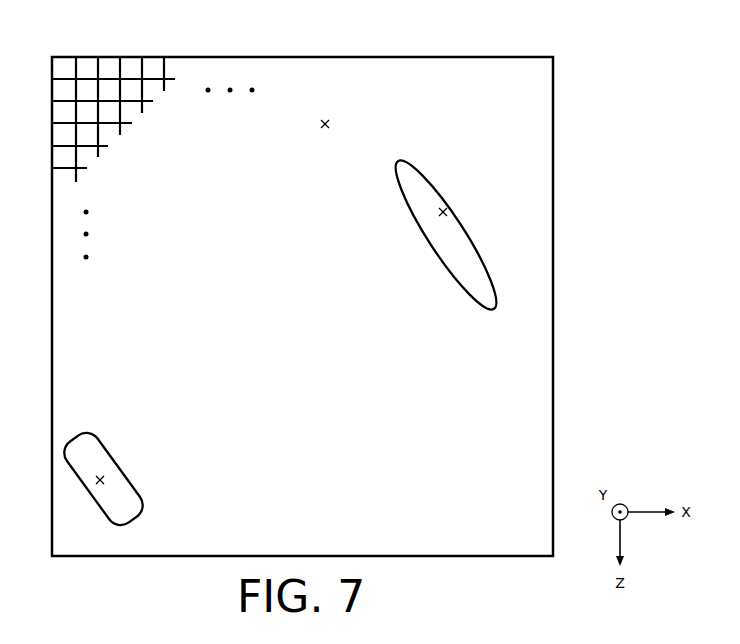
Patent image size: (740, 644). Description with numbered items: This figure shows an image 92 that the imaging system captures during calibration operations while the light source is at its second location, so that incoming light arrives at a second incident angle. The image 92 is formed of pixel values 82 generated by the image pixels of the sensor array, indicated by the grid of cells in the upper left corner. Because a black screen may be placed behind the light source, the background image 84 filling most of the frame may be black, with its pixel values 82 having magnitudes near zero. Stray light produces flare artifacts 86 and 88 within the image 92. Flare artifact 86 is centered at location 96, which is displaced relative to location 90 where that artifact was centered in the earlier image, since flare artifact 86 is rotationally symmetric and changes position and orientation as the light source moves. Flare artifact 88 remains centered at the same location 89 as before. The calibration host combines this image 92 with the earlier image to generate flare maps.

The pixel values 82 is at (108, 66).
The background image 84 is at (315, 346).
The flare artifact 86 is at (445, 183).
The flare artifact 88 is at (110, 451).
The location 89 is at (105, 481).
The location 90 is at (323, 129).
The image 92 is at (353, 288).
The location 96 is at (441, 218).